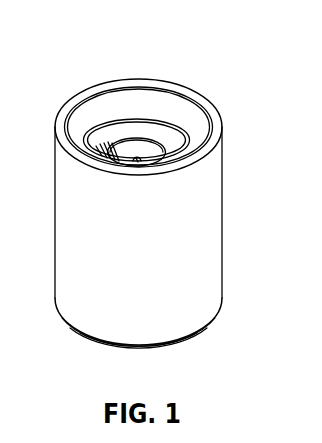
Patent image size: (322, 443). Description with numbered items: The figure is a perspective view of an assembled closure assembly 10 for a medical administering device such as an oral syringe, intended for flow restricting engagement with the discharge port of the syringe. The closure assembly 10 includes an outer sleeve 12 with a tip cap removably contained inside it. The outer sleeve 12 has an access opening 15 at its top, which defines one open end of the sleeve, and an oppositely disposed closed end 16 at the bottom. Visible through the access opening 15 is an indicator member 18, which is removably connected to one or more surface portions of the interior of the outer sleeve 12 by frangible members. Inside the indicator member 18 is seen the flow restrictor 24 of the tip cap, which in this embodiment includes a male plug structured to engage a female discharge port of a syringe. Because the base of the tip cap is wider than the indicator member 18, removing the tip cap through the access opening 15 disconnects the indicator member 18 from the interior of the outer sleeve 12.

The closure assembly 10 is at (158, 207).
The outer sleeve 12 is at (222, 200).
The access opening 15 is at (163, 84).
The closed end 16 is at (207, 322).
The indicator member 18 is at (130, 119).
The flow restrictor 24 is at (113, 145).